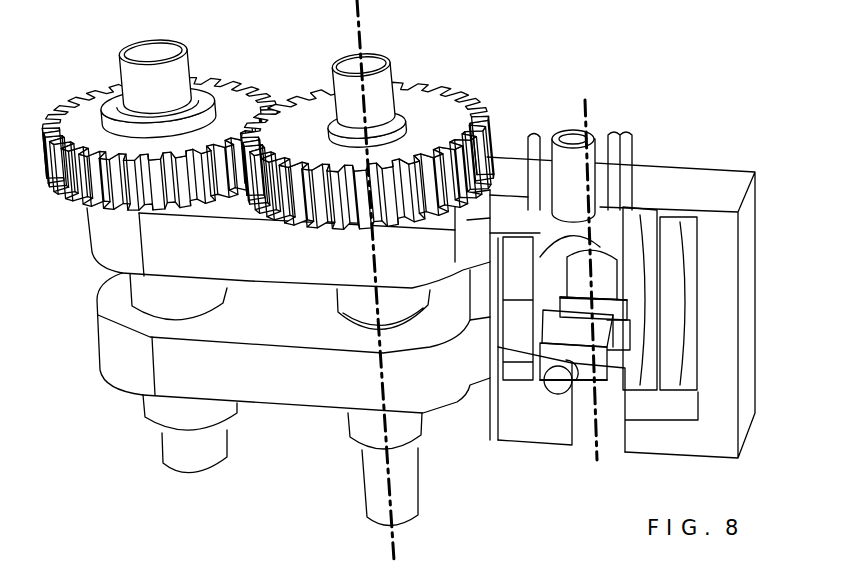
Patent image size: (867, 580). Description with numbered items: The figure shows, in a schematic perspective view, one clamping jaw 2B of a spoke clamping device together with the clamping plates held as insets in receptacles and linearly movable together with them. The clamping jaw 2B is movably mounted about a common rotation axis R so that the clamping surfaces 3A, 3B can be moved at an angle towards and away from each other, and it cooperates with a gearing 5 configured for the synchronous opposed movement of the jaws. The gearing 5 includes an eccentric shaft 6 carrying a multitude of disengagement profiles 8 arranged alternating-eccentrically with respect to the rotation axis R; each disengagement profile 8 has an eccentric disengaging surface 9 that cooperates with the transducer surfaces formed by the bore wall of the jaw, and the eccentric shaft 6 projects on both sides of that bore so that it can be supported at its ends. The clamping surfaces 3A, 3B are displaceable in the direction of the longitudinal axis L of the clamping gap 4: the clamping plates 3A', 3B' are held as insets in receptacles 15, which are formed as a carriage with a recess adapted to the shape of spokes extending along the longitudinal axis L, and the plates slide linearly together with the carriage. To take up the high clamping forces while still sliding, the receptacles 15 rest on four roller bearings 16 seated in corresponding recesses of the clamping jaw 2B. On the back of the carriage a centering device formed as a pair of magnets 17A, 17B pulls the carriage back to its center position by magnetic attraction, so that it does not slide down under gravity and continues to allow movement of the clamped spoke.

The gearing 5 is at (268, 58).
The rotation axis R is at (362, 52).
The clamping gap 4 is at (557, 238).
The longitudinal axis L is at (590, 121).
The clamping jaw 2B is at (678, 173).
The clamping plate 3B' is at (675, 225).
The receptacle 15 is at (641, 257).
The clamping surface 3B is at (671, 293).
The clamping surface 3A is at (672, 343).
The roller bearing 16 is at (682, 362).
The clamping plate 3A' is at (677, 378).
The disengagement profile 8 is at (383, 309).
The disengaging surface 9 is at (385, 431).
The eccentric shaft 6 is at (403, 473).
The magnet 17A is at (548, 390).
The magnet 17B is at (575, 373).